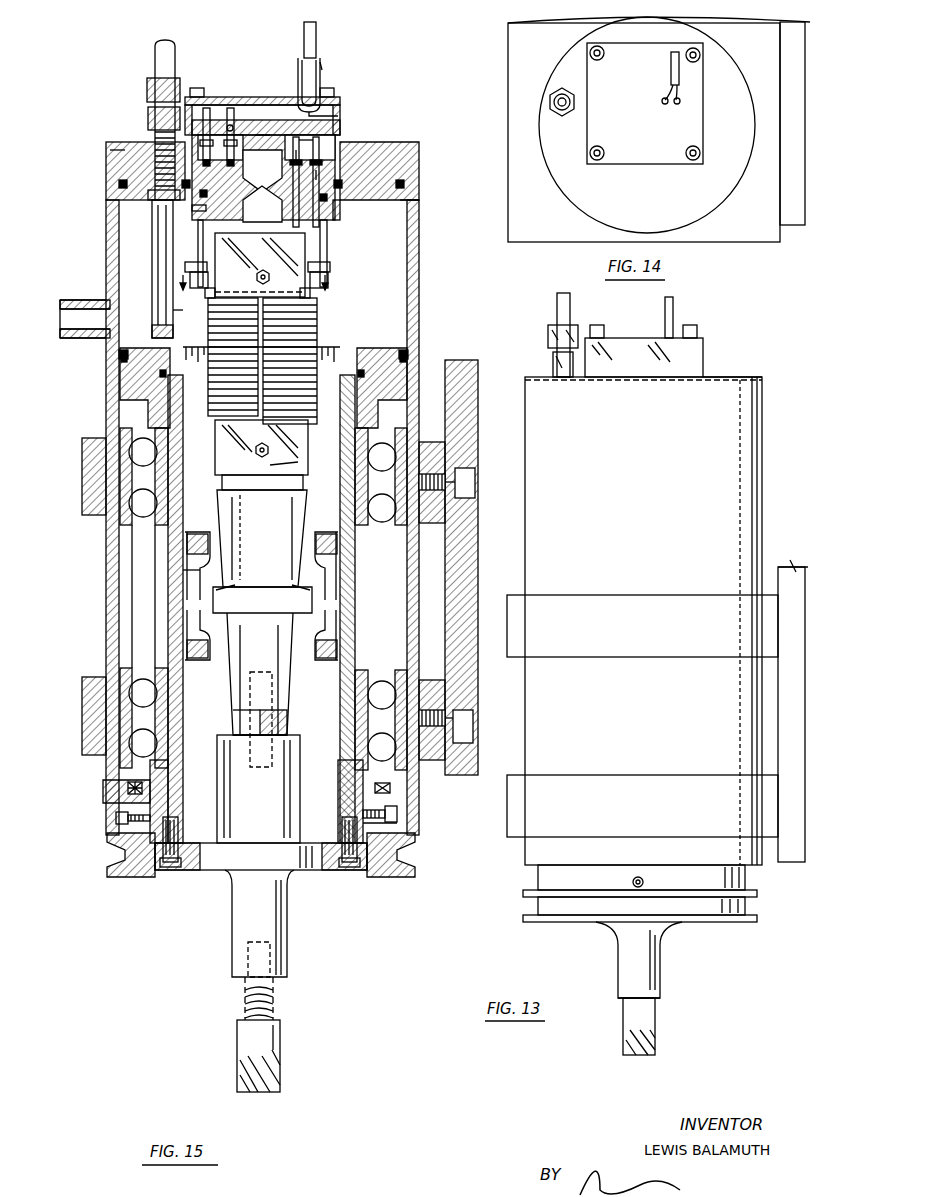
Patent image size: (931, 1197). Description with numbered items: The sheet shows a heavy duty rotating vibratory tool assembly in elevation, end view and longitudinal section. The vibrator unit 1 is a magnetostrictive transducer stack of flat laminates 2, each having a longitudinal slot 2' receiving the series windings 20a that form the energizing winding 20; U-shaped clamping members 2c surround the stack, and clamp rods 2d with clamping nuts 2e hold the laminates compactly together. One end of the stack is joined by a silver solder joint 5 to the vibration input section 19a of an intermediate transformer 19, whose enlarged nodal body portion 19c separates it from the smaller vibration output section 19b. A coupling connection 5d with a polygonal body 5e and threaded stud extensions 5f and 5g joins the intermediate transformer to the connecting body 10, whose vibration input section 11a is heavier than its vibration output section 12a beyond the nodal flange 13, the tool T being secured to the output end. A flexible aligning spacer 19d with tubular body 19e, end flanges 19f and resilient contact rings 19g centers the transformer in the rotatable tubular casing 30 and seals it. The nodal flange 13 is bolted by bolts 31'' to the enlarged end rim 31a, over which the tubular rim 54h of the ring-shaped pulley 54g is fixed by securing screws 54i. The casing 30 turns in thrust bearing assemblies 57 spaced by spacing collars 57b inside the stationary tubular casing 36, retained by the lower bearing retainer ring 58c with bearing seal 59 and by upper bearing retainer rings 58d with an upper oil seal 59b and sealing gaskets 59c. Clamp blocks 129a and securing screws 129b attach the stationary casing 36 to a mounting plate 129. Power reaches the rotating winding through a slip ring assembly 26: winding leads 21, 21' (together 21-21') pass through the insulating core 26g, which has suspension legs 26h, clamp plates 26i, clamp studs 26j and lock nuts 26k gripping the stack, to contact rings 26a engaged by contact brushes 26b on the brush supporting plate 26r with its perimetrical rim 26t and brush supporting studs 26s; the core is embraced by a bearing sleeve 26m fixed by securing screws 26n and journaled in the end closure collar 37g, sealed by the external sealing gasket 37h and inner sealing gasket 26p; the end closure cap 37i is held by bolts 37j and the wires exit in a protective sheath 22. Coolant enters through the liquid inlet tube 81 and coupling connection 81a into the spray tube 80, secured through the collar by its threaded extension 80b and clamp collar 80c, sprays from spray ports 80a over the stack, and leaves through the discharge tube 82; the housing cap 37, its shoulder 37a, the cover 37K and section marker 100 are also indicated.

In FIG. 15, the vibrator unit 1 is at (246, 236).
In FIG. 15, the magnetostrictive laminates 2 is at (268, 455).
In FIG. 15, the longitudinal slot 2' is at (260, 280).
In FIG. 15, the clamping members 2c is at (285, 250).
In FIG. 15, the clamp rods 2d is at (258, 270).
In FIG. 15, the clamping nuts 2e is at (299, 462).
In FIG. 15, the silver solder joint 5 is at (260, 500).
In FIG. 15, the coupling connection 5d is at (295, 725).
In FIG. 15, the polygonal body 5e is at (233, 729).
In FIG. 15, the threaded stud extension 5f is at (250, 710).
In FIG. 15, the threaded stud extension 5g is at (250, 748).
In FIG. 15, the connecting body 10 is at (222, 902).
In FIG. 13, the connecting body 10 is at (608, 956).
In FIG. 15, the vibration input section 11a is at (268, 809).
In FIG. 15, the vibration output section 12a is at (259, 956).
In FIG. 13, the vibration output section 12a is at (660, 968).
In FIG. 15, the nodal flange 13 is at (300, 870).
In FIG. 15, the intermediate transformer 19 is at (293, 648).
In FIG. 15, the vibration input section 19a is at (272, 538).
In FIG. 15, the vibration output section 19b is at (260, 674).
In FIG. 15, the enlarged nodal body portion 19c is at (258, 595).
In FIG. 15, the flexible aligning spacer 19d is at (199, 524).
In FIG. 15, the flexible tubular body 19e is at (200, 572).
In FIG. 15, the end flanges 19f is at (318, 532).
In FIG. 15, the resilient contact rings 19g is at (322, 640).
In FIG. 15, the energizing winding 20 is at (327, 323).
In FIG. 15, the series windings 20a is at (212, 345).
In FIG. 15, the winding lead 21 is at (315, 85).
In FIG. 15, the winding lead 21' is at (336, 62).
In FIG. 15, the winding leads 21-21' is at (349, 184).
In FIG. 15, the protective sheath 22 is at (316, 40).
In FIG. 14, the protective sheath 22 is at (680, 72).
In FIG. 13, the protective sheath 22 is at (674, 305).
In FIG. 15, the slip ring assembly 26 is at (351, 139).
In FIG. 15, the contact rings 26a is at (342, 125).
In FIG. 15, the contact brushes 26b is at (206, 108).
In FIG. 15, the insulating core 26g is at (274, 180).
In FIG. 15, the suspension legs 26h is at (198, 240).
In FIG. 15, the insulating clamp plate 26i is at (207, 296).
In FIG. 15, the clamp stud 26j is at (190, 280).
In FIG. 15, the lock nut 26k is at (356, 250).
In FIG. 15, the bearing sleeve 26m is at (300, 150).
In FIG. 15, the securing screws 26n is at (192, 208).
In FIG. 15, the inner sealing gasket 26p is at (318, 172).
In FIG. 15, the brush supporting plate 26r is at (262, 133).
In FIG. 15, the brush supporting studs 26s is at (232, 124).
In FIG. 15, the perimetrical rim 26t is at (316, 142).
In FIG. 15, the rotatable tubular casing 30 is at (191, 480).
In FIG. 15, the bolts 31'' is at (244, 857).
In FIG. 15, the enlarged end rim 31a is at (345, 800).
In FIG. 15, the stationary tubular casing 36 is at (420, 320).
In FIG. 13, the stationary tubular casing 36 is at (745, 412).
In FIG. 15, the housing cap 37 is at (126, 140).
In FIG. 15, the cap shoulder 37a is at (116, 150).
In FIG. 15, the end closure collar 37g is at (405, 184).
In FIG. 15, the external sealing gasket 37h is at (410, 200).
In FIG. 15, the end closure cap 37i is at (252, 97).
In FIG. 14, the end closure cap 37i is at (650, 160).
In FIG. 13, the end closure cap 37i is at (704, 350).
In FIG. 15, the bolts 37j is at (335, 90).
In FIG. 14, the bolts 37j is at (603, 160).
In FIG. 13, the bolts 37j is at (700, 327).
In FIG. 14, the cover 37K is at (581, 190).
In FIG. 13, the cover 37K is at (730, 375).
In FIG. 15, the ring-shaped pulley 54g is at (388, 880).
In FIG. 13, the ring-shaped pulley 54g is at (744, 925).
In FIG. 15, the tubular rim 54h is at (397, 812).
In FIG. 13, the tubular rim 54h is at (746, 882).
In FIG. 15, the securing screws 54i is at (397, 826).
In FIG. 13, the securing screws 54i is at (632, 886).
In FIG. 15, the thrust bearing assemblies 57 is at (133, 452).
In FIG. 15, the spacing collars 57b is at (150, 626).
In FIG. 15, the lower bearing retainer ring 58c is at (103, 790).
In FIG. 15, the upper bearing retainer rings 58d is at (130, 395).
In FIG. 15, the bearing seal 59 is at (116, 805).
In FIG. 15, the upper oil seal 59b is at (370, 356).
In FIG. 15, the sealing gaskets 59c is at (118, 354).
In FIG. 15, the spray tube 80 is at (152, 321).
In FIG. 15, the spray ports 80a is at (175, 312).
In FIG. 13, the spray ports 80a is at (553, 370).
In FIG. 15, the threaded extension 80b is at (153, 160).
In FIG. 15, the clamp collar 80c is at (148, 195).
In FIG. 15, the liquid inlet tube 81 is at (155, 50).
In FIG. 13, the liquid inlet tube 81 is at (557, 302).
In FIG. 15, the coupling connection 81a is at (147, 85).
In FIG. 13, the coupling connection 81a is at (548, 336).
In FIG. 15, the discharge tube 82 is at (76, 300).
In FIG. 15, the section line 100 is at (270, 273).
In FIG. 15, the mounting plate 129 is at (460, 364).
In FIG. 14, the mounting plate 129 is at (790, 226).
In FIG. 13, the mounting plate 129 is at (790, 566).
In FIG. 15, the clamp blocks 129a is at (82, 462).
In FIG. 14, the clamp blocks 129a is at (712, 235).
In FIG. 13, the clamp blocks 129a is at (600, 606).
In FIG. 15, the securing screws 129b is at (475, 486).
In FIG. 15, the tool T is at (228, 1051).
In FIG. 13, the tool T is at (667, 1032).